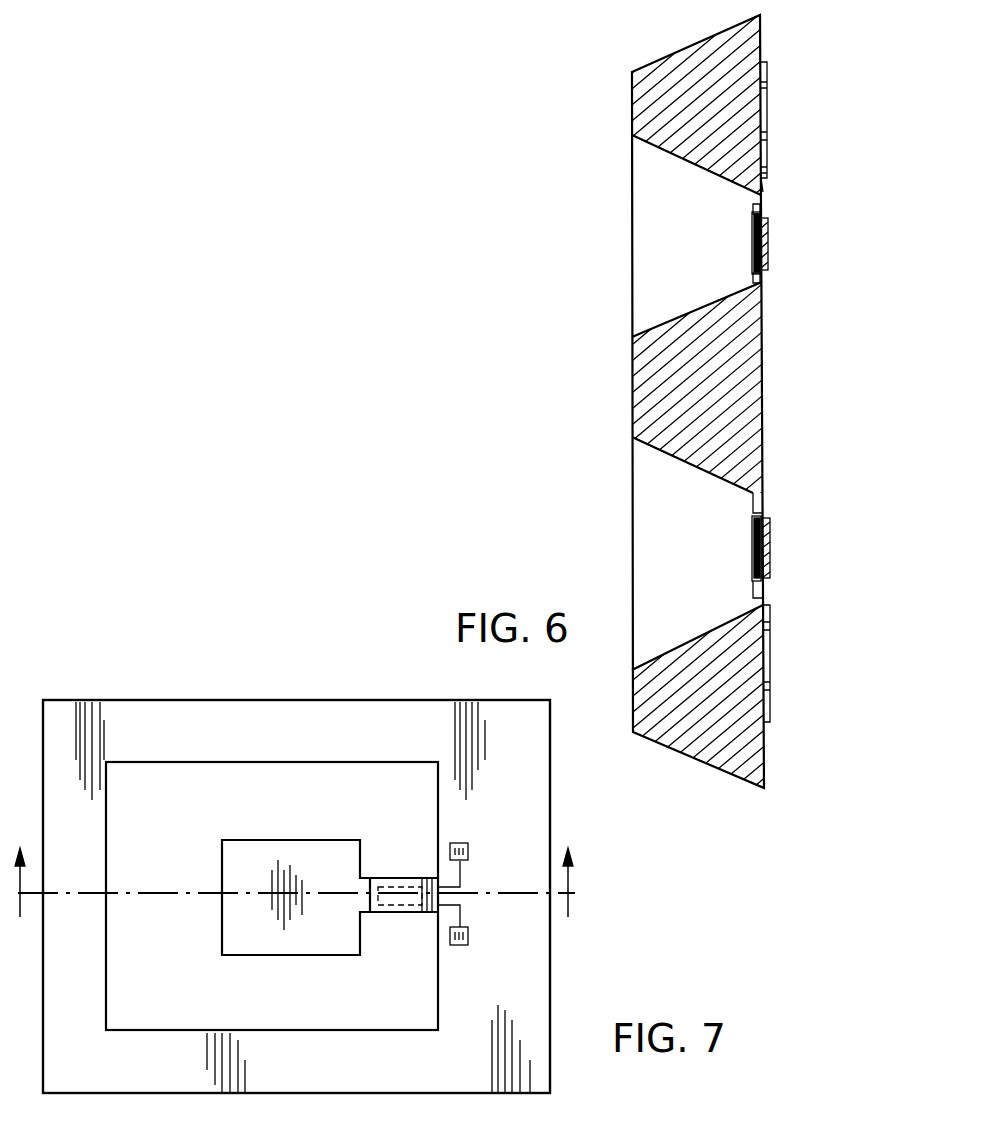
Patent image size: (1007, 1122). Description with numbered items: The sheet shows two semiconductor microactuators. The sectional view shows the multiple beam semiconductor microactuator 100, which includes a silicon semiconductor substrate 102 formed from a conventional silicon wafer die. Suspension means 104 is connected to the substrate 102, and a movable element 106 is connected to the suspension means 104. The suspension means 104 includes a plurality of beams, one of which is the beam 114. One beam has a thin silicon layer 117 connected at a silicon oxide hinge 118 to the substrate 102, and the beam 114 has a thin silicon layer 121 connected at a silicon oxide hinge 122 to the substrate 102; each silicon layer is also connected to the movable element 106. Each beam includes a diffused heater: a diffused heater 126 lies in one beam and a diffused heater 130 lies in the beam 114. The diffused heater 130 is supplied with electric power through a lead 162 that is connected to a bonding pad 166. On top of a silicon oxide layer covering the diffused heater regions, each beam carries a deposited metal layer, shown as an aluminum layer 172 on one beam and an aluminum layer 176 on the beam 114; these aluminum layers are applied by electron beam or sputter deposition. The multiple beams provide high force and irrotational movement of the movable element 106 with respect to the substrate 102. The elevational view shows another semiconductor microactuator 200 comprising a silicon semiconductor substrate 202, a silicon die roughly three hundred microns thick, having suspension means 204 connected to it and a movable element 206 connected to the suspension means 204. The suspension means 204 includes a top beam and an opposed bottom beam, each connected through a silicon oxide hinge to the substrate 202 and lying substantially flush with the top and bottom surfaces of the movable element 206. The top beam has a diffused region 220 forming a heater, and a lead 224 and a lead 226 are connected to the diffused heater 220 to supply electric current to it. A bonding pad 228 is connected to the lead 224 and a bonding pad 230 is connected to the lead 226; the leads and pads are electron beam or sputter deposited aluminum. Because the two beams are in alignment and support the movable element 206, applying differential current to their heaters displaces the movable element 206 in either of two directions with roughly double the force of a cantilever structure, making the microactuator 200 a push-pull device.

In FIG. 6, the multiple beam semiconductor microactuator 100 is at (763, 43).
In FIG. 6, the silicon semiconductor substrate 102 is at (654, 136).
In FIG. 6, the suspension means 104 is at (753, 258).
In FIG. 6, the movable element 106 is at (764, 400).
In FIG. 6, the beam 114 is at (754, 588).
In FIG. 6, the thin silicon layer 117 is at (752, 210).
In FIG. 6, the silicon oxide hinge 118 is at (766, 205).
In FIG. 6, the thin silicon layer 121 is at (756, 505).
In FIG. 6, the silicon oxide hinge 122 is at (808, 647).
In FIG. 6, the diffused heater 126 is at (755, 243).
In FIG. 6, the diffused heater 130 is at (755, 532).
In FIG. 6, the lead 162 is at (771, 640).
In FIG. 6, the bonding pad 166 is at (771, 695).
In FIG. 6, the aluminum layer 172 is at (769, 240).
In FIG. 6, the aluminum layer 176 is at (770, 540).
In FIG. 7, the semiconductor microactuator 200 is at (323, 873).
In FIG. 7, the silicon semiconductor substrate 202 is at (552, 790).
In FIG. 7, the suspension means 204 is at (380, 880).
In FIG. 7, the movable element 206 is at (300, 840).
In FIG. 7, the diffused region 220 is at (394, 915).
In FIG. 7, the lead 224 is at (462, 878).
In FIG. 7, the lead 226 is at (462, 908).
In FIG. 7, the bonding pad 228 is at (462, 843).
In FIG. 7, the bonding pad 230 is at (462, 947).